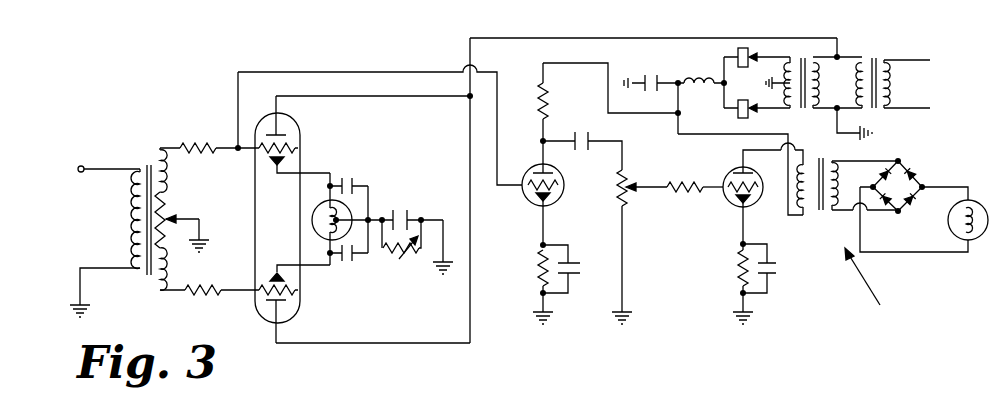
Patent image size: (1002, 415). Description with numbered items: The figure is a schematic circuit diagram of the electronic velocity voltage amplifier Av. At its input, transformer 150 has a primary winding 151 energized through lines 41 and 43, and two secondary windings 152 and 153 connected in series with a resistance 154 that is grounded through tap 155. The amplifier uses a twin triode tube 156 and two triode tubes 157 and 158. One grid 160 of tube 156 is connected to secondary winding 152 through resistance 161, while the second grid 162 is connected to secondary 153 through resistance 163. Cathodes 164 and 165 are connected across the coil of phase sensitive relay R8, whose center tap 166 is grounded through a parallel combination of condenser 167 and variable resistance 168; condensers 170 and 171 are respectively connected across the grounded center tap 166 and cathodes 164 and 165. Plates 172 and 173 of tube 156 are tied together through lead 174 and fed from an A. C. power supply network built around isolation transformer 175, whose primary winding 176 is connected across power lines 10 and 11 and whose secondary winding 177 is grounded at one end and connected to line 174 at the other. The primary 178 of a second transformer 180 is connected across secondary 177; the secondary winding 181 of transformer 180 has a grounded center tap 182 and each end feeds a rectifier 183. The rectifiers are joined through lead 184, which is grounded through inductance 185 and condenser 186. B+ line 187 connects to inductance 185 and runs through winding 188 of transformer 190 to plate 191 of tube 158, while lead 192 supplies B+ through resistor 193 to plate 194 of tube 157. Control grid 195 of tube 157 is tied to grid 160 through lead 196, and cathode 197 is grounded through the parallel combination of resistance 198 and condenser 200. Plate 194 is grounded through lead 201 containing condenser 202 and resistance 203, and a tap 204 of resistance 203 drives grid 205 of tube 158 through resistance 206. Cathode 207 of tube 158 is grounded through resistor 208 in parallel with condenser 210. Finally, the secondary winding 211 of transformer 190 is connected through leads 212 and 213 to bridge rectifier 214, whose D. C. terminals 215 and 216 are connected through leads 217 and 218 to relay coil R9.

The line 43 is at (93, 168).
The line 41 is at (97, 267).
The transformer 150 is at (148, 163).
The primary winding 151 is at (130, 201).
The secondary winding 152 is at (170, 164).
The secondary winding 153 is at (169, 270).
The resistance 154 is at (169, 205).
The tap 155 is at (204, 225).
The resistance 161 is at (215, 146).
The resistance 163 is at (210, 292).
The twin triode tube 156 is at (302, 126).
The plate 172 is at (275, 123).
The plate 173 is at (282, 310).
The grid 160 is at (298, 148).
The grid 162 is at (298, 290).
The cathode 164 is at (276, 176).
The cathode 165 is at (280, 269).
The condenser 170 is at (358, 178).
The condenser 171 is at (360, 258).
The relay coil R8 is at (347, 207).
The center tap 166 is at (382, 218).
The condenser 167 is at (409, 215).
The variable resistance 168 is at (414, 254).
The lead 174 is at (428, 97).
The lead 196 is at (355, 72).
The lead 192 is at (571, 65).
The resistor 193 is at (542, 90).
The plate 194 is at (553, 170).
The triode tube 157 is at (523, 205).
The control grid 195 is at (558, 195).
The cathode 197 is at (545, 208).
The resistance 198 is at (537, 270).
The condenser 200 is at (576, 275).
The condenser 202 is at (590, 140).
The resistance 203 is at (632, 205).
The lead 201 is at (624, 266).
The tap 204 is at (648, 184).
The grid 205 is at (722, 183).
The resistance 206 is at (678, 193).
The line 187 is at (689, 134).
The inductance 185 is at (681, 117).
The condenser 186 is at (663, 73).
The lead 184 is at (719, 78).
The secondary winding 181 is at (761, 60).
The rectifier 183 is at (738, 52).
The center tap 182 is at (780, 87).
The second transformer 180 is at (805, 51).
The primary winding 178 is at (819, 70).
The secondary winding 177 is at (859, 90).
The isolation transformer 175 is at (880, 53).
The primary winding 176 is at (892, 78).
The power line 10 is at (931, 60).
The power line 11 is at (931, 108).
The plate 191 is at (774, 162).
The triode tube 158 is at (723, 211).
The cathode 207 is at (750, 209).
The resistor 208 is at (735, 266).
The condenser 210 is at (777, 274).
The winding 188 is at (805, 214).
The transformer 190 is at (824, 158).
The secondary winding 211 is at (838, 170).
The lead 212 is at (893, 158).
The lead 213 is at (889, 213).
The bridge rectifier 214 is at (919, 175).
The D. C. terminal 216 is at (928, 194).
The D. C. terminal 215 is at (861, 215).
The lead 217 is at (951, 186).
The lead 218 is at (931, 253).
The relay coil R9 is at (968, 240).
The velocity voltage amplifier Av is at (876, 293).